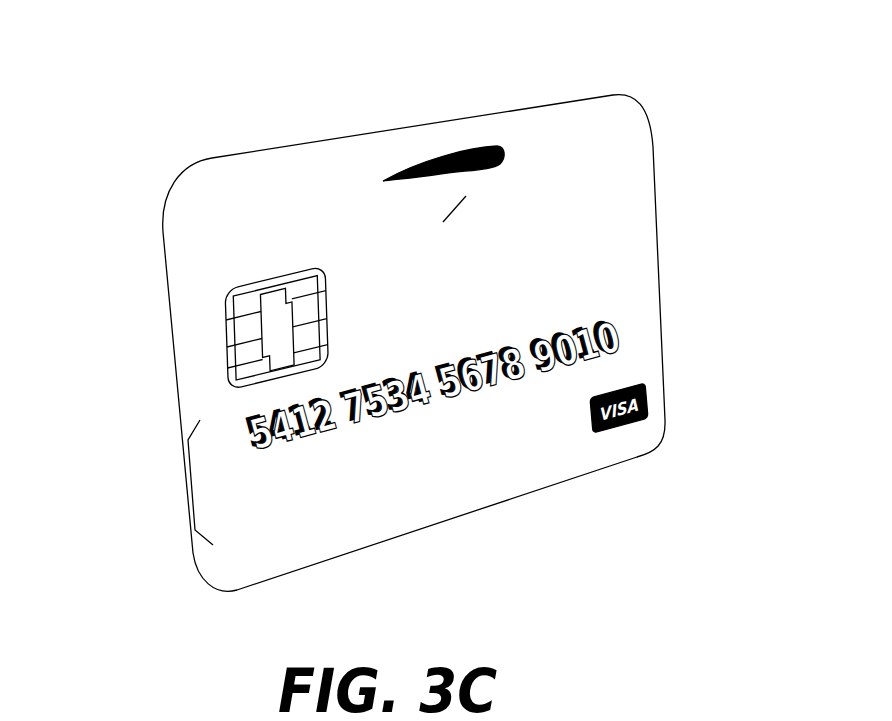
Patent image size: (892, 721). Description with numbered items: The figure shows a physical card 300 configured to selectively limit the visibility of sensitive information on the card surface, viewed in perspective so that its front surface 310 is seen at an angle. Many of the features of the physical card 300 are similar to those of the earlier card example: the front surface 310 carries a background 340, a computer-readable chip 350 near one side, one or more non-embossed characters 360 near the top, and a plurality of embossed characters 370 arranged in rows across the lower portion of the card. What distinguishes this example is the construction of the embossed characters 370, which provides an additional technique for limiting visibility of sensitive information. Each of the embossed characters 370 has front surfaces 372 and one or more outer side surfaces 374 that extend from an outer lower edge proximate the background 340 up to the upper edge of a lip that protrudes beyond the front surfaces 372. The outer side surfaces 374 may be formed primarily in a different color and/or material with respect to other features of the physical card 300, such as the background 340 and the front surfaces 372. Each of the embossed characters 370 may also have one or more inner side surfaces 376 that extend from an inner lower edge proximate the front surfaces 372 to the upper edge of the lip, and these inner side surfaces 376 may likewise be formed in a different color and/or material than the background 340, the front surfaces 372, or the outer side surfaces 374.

The physical card 300 is at (469, 300).
The front surface 310 is at (263, 158).
The background 340 is at (572, 246).
The computer-readable chip 350 is at (223, 320).
The non-embossed characters 360 is at (467, 147).
The embossed characters 370 is at (194, 481).
The front surfaces 372 is at (268, 530).
The outer side surfaces 374 is at (362, 493).
The inner side surfaces 376 is at (463, 470).